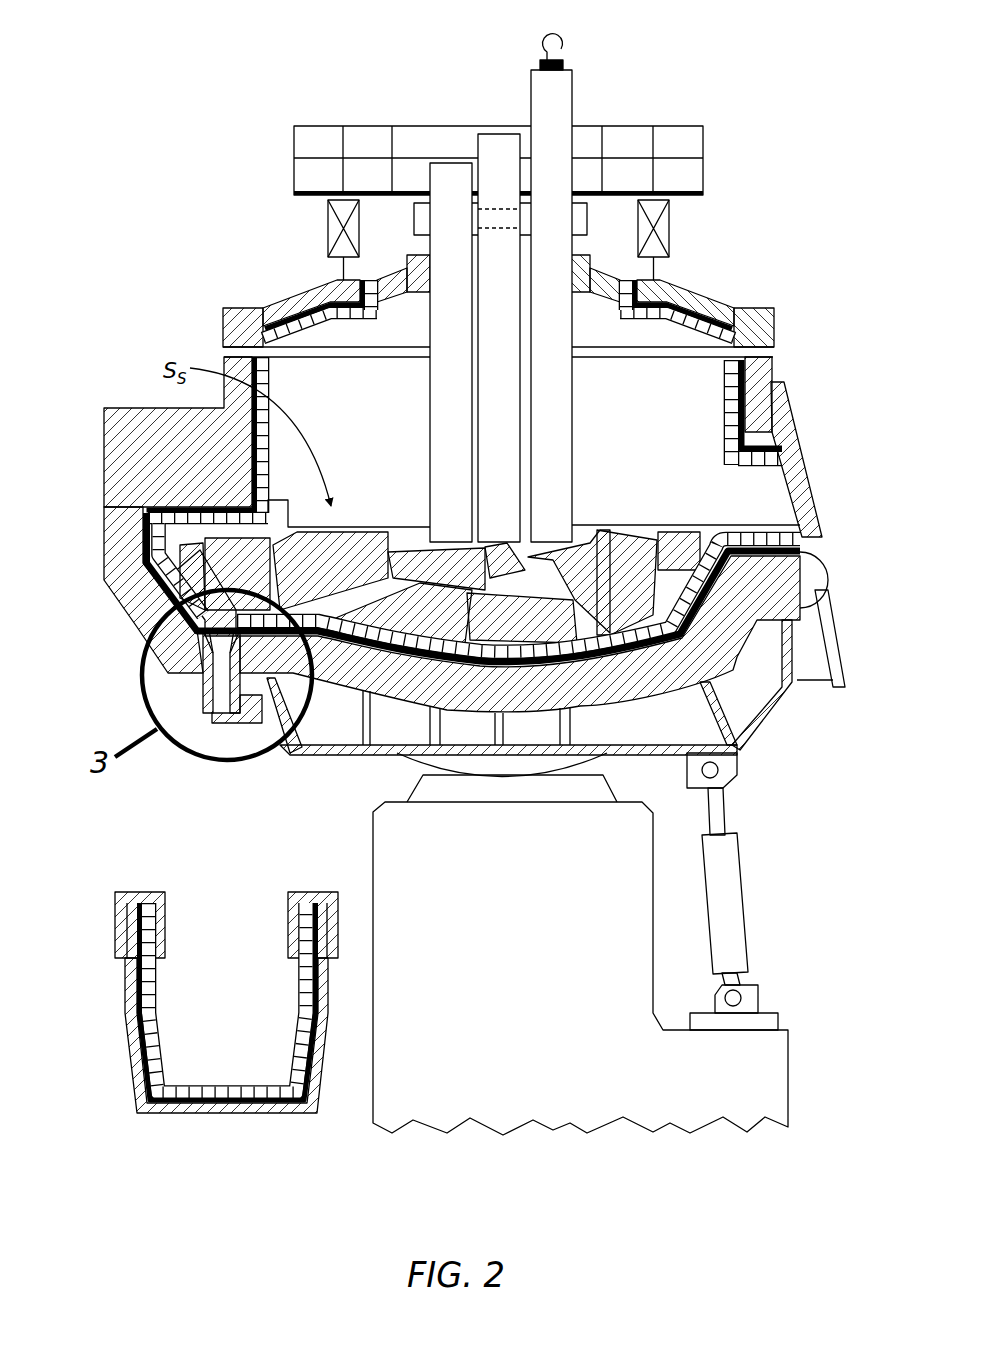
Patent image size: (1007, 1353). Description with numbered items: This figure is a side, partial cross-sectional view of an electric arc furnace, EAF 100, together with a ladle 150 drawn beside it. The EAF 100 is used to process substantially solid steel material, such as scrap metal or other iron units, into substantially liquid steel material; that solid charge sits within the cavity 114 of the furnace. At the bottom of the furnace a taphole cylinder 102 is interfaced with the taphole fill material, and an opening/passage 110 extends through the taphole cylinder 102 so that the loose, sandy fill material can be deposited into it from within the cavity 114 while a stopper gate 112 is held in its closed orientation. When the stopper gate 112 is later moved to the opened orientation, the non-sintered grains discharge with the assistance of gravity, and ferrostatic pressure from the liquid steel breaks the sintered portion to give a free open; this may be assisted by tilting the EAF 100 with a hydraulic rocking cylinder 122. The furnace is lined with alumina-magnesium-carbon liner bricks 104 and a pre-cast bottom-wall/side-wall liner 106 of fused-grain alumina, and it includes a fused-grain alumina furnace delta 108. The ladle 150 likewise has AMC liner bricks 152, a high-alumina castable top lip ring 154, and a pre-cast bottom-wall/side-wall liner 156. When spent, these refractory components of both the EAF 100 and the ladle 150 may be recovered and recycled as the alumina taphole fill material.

The electric arc furnace 100 is at (145, 88).
The taphole cylinder 102 is at (190, 695).
The AMC liner bricks 104 is at (764, 472).
The pre-cast bottom-wall/side-wall liner 106 is at (752, 405).
The furnace delta 108 is at (214, 632).
The opening/passage 110 is at (222, 700).
The stopper gate 112 is at (246, 736).
The cavity 114 is at (648, 530).
The hydraulic rocking cylinder 122 is at (772, 888).
The ladle 150 is at (72, 884).
The AMC liner bricks 152 is at (253, 1080).
The top lip ring 154 is at (312, 884).
The pre-cast bottom-wall/side-wall liner 156 is at (215, 1108).